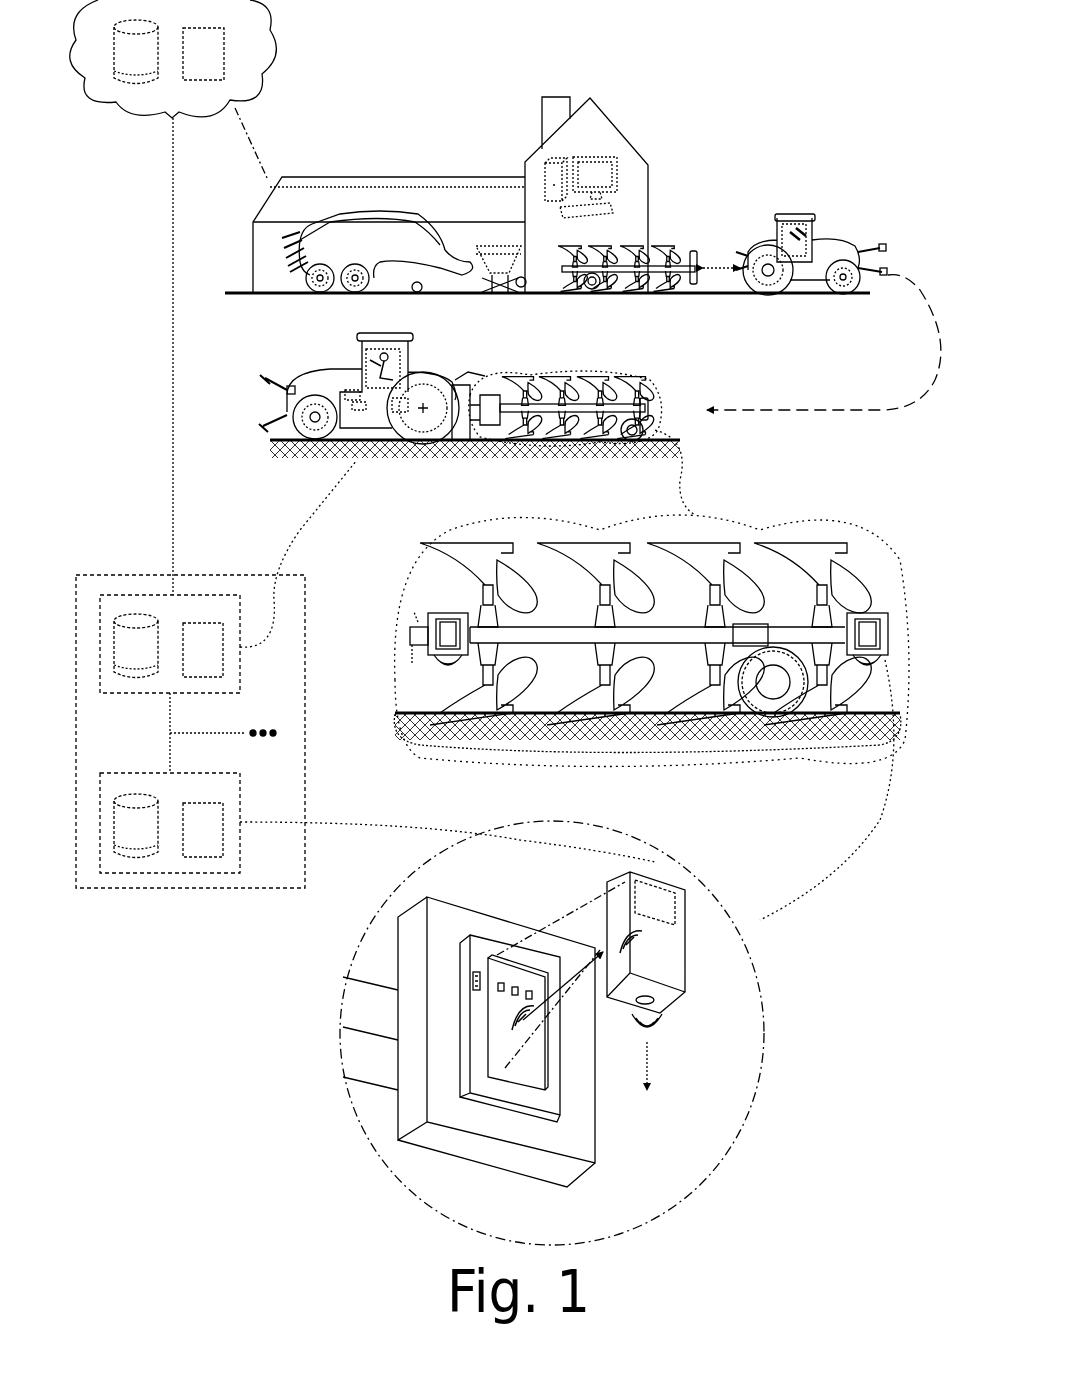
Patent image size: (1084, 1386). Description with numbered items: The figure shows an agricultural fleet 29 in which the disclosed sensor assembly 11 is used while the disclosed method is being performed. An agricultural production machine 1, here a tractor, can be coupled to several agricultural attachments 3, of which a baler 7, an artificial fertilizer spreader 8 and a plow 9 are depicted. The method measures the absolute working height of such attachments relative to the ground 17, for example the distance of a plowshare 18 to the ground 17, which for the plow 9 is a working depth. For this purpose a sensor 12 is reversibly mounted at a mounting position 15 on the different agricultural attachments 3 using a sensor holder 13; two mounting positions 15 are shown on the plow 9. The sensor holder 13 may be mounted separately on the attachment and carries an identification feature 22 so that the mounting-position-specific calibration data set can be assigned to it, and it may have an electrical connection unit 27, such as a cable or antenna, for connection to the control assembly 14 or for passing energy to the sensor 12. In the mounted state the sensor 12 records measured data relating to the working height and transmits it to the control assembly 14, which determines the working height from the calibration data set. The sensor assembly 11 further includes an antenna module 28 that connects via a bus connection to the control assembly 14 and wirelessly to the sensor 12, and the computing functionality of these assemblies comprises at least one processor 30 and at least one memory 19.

The agricultural production machine 1 is at (783, 216).
The agricultural attachment 3 is at (595, 450).
The baler 7 is at (352, 232).
The artificial fertilizer spreader 8 is at (490, 250).
The plow 9 is at (652, 468).
The sensor assembly 11 is at (480, 638).
The sensor 12 is at (446, 615).
The sensor holder 13 is at (553, 1078).
The control assembly 14 is at (150, 205).
The mounting position 15 is at (438, 592).
The ground 17 is at (415, 713).
The plowshare 18 is at (572, 540).
The memory 19 is at (151, 68).
The identification feature 22 is at (525, 1022).
The electrical connection unit 27 is at (470, 983).
The antenna module 28 is at (400, 415).
The agricultural fleet 29 is at (897, 223).
The processor 30 is at (219, 68).